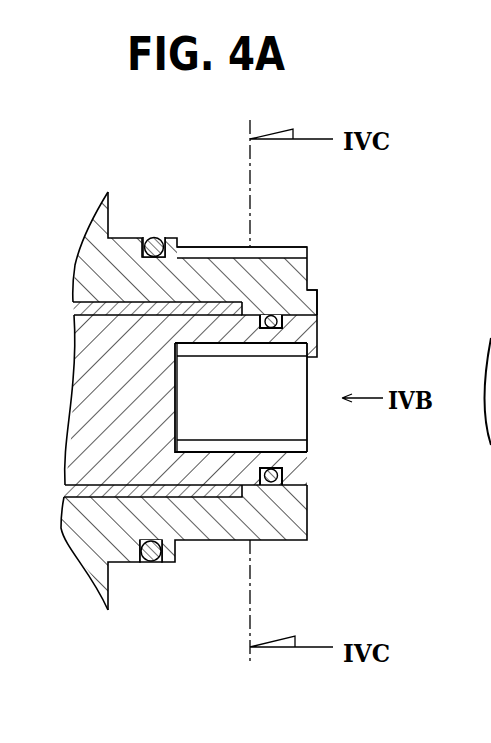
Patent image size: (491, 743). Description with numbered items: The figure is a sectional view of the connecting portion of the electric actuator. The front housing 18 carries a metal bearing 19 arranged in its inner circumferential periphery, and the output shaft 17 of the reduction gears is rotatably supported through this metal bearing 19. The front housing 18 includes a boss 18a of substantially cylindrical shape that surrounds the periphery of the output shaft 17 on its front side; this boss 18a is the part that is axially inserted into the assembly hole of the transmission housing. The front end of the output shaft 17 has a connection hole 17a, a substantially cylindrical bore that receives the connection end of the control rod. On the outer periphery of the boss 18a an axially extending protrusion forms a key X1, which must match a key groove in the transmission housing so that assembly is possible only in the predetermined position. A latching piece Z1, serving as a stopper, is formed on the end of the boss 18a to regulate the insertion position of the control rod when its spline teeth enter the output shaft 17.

The output shaft 17 is at (97, 388).
The connection hole 17a is at (283, 420).
The front housing 18 is at (110, 212).
The boss 18a is at (283, 510).
The metal bearing 19 is at (85, 304).
The key X1 is at (282, 246).
The latching piece Z1 is at (318, 348).